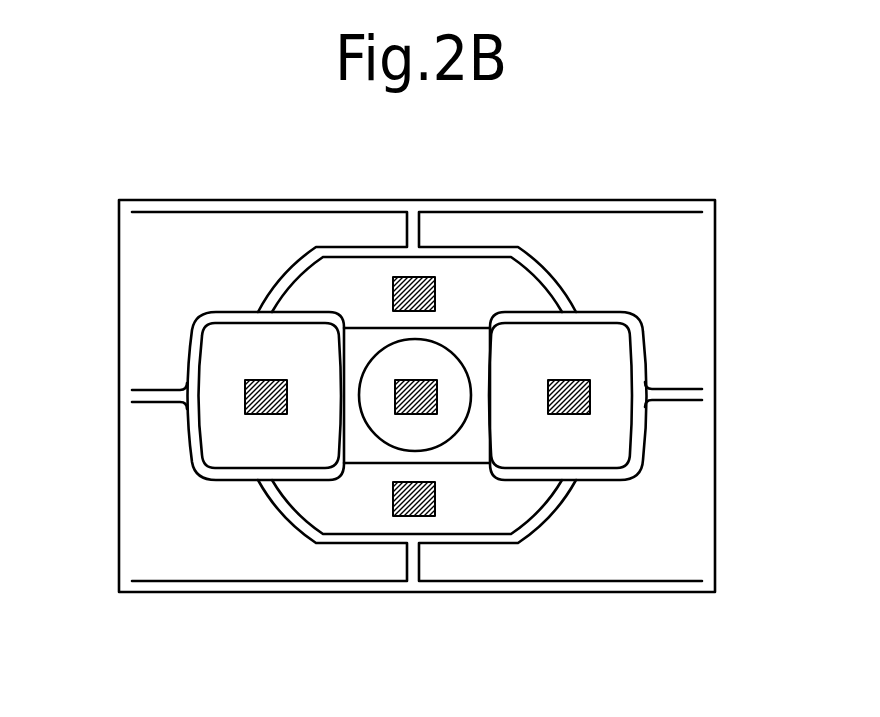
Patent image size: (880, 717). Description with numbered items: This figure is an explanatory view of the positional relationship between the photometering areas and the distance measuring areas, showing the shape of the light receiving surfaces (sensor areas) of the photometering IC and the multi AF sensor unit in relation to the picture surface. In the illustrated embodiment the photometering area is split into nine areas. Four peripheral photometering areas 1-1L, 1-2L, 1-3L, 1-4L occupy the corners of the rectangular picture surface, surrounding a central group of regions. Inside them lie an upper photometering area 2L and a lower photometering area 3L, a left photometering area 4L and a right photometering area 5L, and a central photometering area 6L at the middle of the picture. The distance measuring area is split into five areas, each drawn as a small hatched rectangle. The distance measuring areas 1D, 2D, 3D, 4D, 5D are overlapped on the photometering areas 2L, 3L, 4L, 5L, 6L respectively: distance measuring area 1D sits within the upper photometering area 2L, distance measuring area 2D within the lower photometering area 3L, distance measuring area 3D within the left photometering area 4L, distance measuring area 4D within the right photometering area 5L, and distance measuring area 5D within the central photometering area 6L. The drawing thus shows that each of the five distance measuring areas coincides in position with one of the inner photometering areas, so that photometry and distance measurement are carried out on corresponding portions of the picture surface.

The peripheral photometering area 1-1L is at (269, 301).
The peripheral photometering area 1-2L is at (560, 300).
The peripheral photometering area 1-3L is at (560, 490).
The peripheral photometering area 1-4L is at (269, 491).
The upper photometering area 2L is at (417, 292).
The lower photometering area 3L is at (417, 498).
The left photometering area 4L is at (266, 396).
The right photometering area 5L is at (568, 396).
The central photometering area 6L is at (415, 395).
The distance measuring area 1D is at (421, 292).
The distance measuring area 2D is at (393, 511).
The distance measuring area 3D is at (250, 408).
The distance measuring area 4D is at (588, 378).
The distance measuring area 5D is at (395, 398).